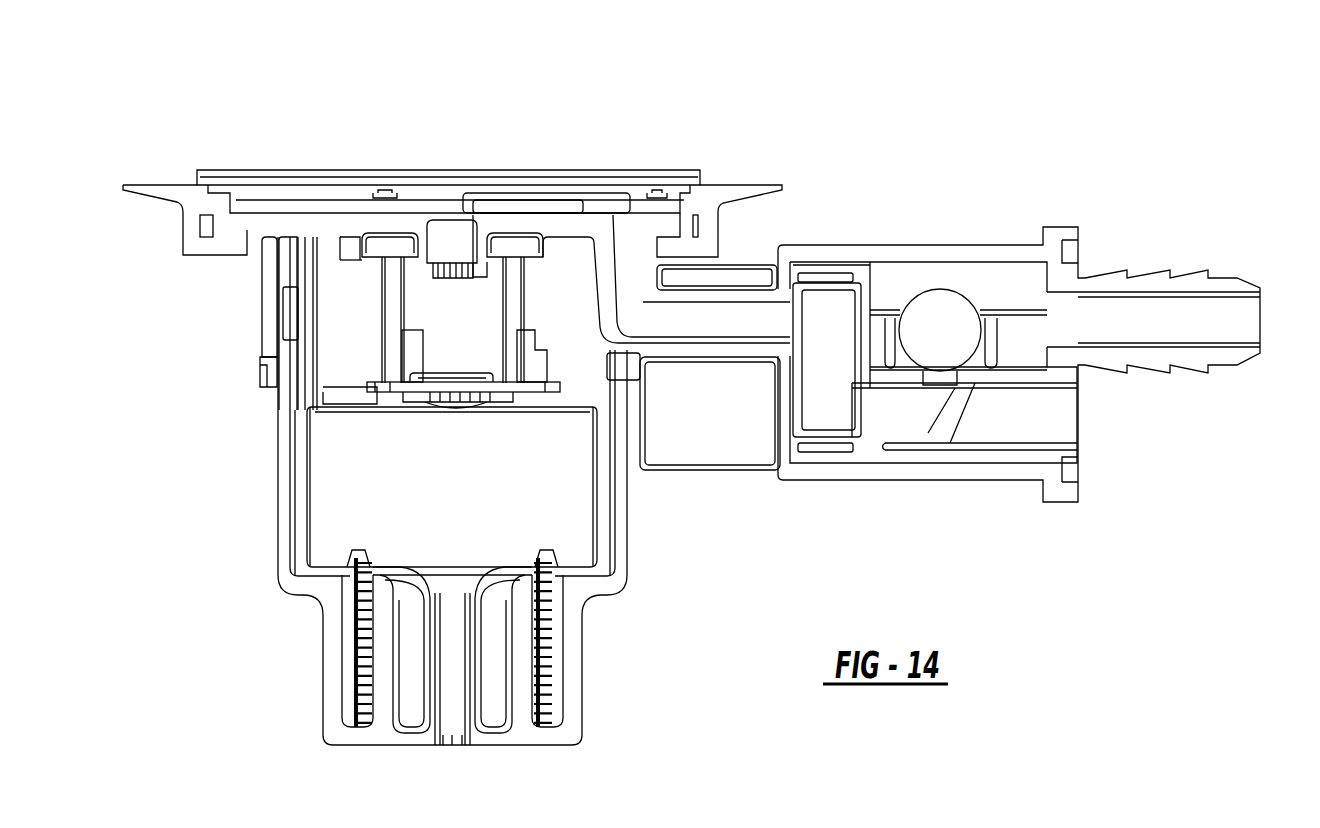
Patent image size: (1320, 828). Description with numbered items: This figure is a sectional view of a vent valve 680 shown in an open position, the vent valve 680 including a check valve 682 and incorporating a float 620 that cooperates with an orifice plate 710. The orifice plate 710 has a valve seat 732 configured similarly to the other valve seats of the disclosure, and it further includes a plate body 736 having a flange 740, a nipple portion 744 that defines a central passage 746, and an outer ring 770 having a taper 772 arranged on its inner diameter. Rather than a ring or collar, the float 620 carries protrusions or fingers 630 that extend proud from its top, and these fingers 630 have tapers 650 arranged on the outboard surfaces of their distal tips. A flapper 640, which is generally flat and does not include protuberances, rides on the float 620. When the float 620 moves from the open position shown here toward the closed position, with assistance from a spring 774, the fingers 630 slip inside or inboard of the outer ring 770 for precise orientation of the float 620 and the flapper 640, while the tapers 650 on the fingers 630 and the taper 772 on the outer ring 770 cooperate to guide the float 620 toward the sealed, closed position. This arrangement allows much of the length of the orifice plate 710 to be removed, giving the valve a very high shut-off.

The vent valve 680 is at (285, 114).
The orifice plate 710 is at (592, 220).
The plate body 736 is at (500, 220).
The flange 740 is at (553, 220).
The valve seat 732 is at (441, 284).
The fingers 630 is at (410, 351).
The flapper 640 is at (414, 392).
The outer ring 770 is at (353, 245).
The taper 772 is at (380, 258).
The nipple portion 744 is at (428, 262).
The central passage 746 is at (462, 250).
The tapers 650 is at (467, 357).
The float 620 is at (368, 482).
The spring 774 is at (545, 634).
The check valve 682 is at (919, 209).